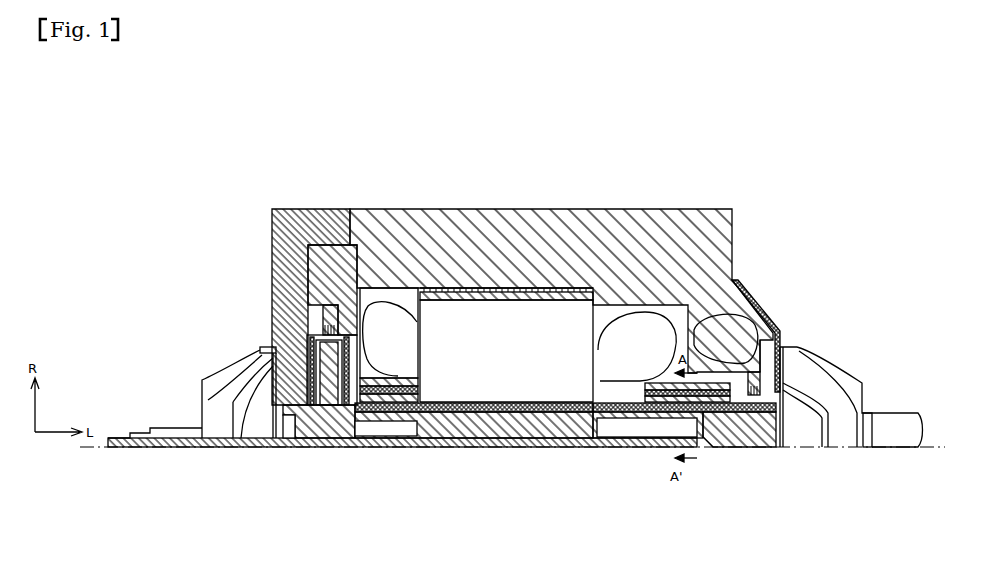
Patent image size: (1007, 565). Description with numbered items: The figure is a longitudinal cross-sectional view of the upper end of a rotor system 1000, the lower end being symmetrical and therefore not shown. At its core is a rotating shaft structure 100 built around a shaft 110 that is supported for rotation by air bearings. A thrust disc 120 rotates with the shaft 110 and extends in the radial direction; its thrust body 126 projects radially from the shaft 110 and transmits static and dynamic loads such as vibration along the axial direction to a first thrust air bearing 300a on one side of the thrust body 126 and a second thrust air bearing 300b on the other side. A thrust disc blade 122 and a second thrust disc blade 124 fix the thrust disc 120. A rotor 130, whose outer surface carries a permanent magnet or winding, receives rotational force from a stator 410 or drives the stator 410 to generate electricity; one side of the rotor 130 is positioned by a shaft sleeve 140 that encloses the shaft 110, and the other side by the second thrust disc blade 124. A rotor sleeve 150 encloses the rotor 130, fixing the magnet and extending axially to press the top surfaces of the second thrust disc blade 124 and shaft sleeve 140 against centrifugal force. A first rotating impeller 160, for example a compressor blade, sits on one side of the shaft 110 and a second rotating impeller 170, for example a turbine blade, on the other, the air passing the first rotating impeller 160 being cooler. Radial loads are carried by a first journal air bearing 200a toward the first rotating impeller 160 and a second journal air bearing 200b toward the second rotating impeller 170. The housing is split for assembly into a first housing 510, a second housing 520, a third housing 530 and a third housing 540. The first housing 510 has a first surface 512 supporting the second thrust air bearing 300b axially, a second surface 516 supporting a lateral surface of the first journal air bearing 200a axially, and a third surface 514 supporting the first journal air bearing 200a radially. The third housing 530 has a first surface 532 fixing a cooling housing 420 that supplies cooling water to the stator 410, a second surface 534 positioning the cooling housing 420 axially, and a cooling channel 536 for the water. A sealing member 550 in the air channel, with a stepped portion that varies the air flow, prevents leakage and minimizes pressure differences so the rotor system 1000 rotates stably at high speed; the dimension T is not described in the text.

The rotor system 1000 is at (262, 122).
The rotating shaft structure 100 is at (213, 463).
The shaft 110 is at (140, 448).
The thrust disc 120 is at (310, 430).
The thrust disc blade 122 is at (300, 428).
The second thrust disc blade 124 is at (405, 402).
The thrust body 126 is at (326, 405).
The rotor 130 is at (548, 434).
The shaft sleeve 140 is at (648, 432).
The rotor sleeve 150 is at (608, 402).
The first rotating impeller 160 is at (208, 384).
The second rotating impeller 170 is at (883, 413).
The first journal air bearing 200a is at (400, 412).
The second journal air bearing 200b is at (710, 412).
The first thrust air bearing 300a is at (243, 447).
The second thrust air bearing 300b is at (332, 425).
The stator 410 is at (460, 393).
The cooling housing 420 is at (498, 302).
The first housing 510 is at (328, 243).
The first surface 512 is at (362, 290).
The third surface 514 is at (396, 376).
The second surface 516 is at (390, 376).
The second housing 520 is at (270, 238).
The third housing 530 is at (637, 232).
The first surface 532 is at (512, 289).
The second surface 534 is at (568, 330).
The cooling channel 536 is at (708, 318).
The third housing 540 is at (757, 312).
The sealing member 550 is at (762, 378).
The thickness T is at (350, 430).